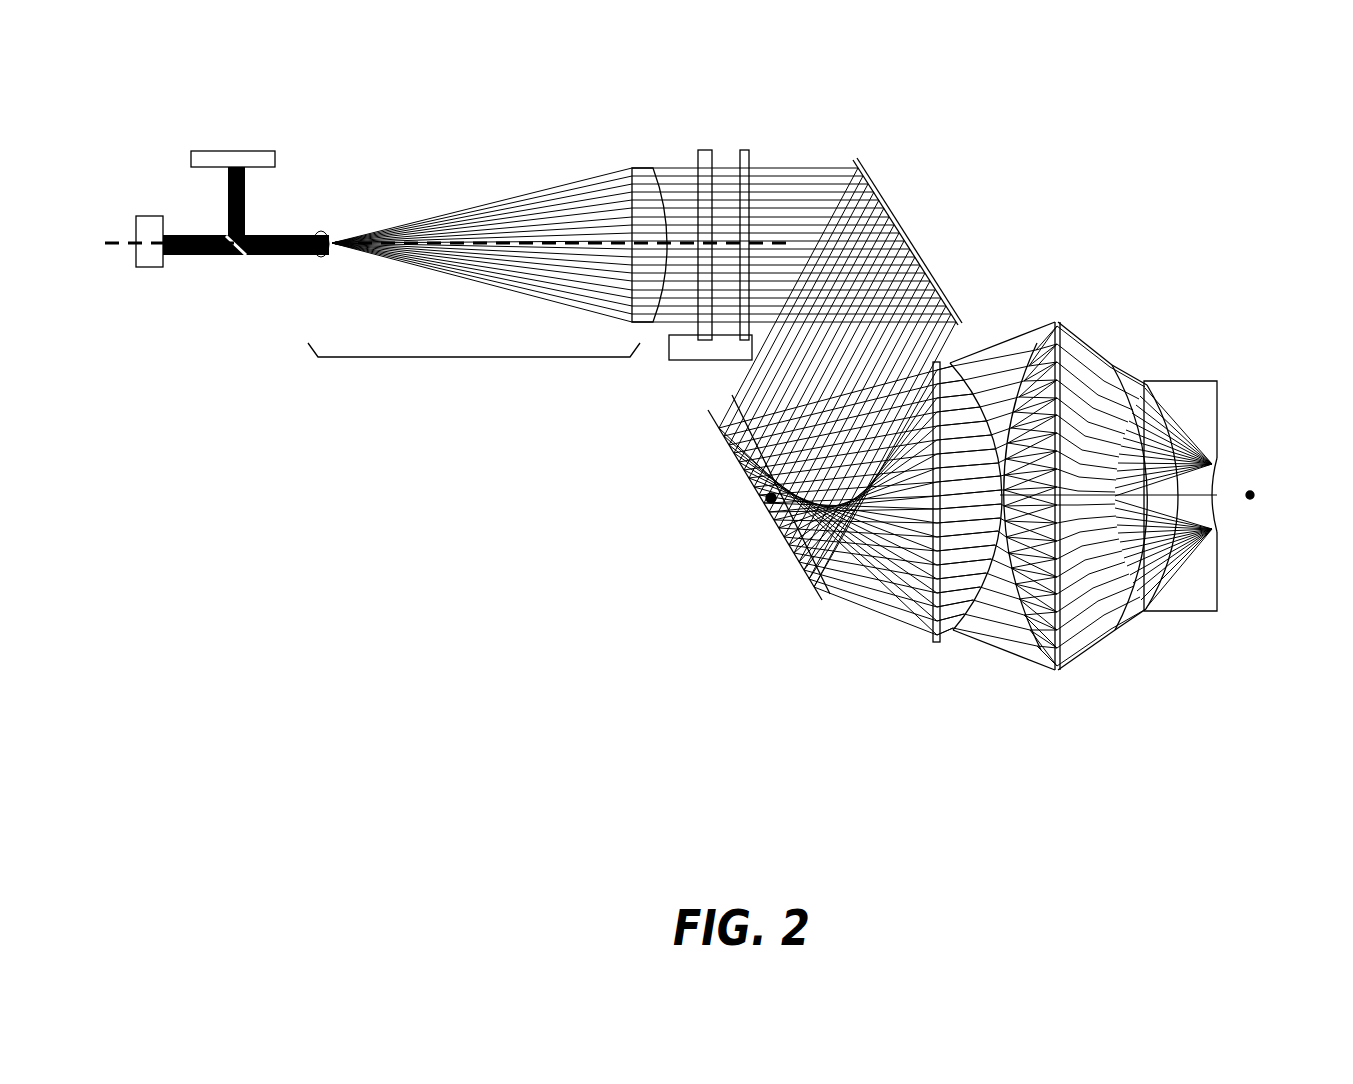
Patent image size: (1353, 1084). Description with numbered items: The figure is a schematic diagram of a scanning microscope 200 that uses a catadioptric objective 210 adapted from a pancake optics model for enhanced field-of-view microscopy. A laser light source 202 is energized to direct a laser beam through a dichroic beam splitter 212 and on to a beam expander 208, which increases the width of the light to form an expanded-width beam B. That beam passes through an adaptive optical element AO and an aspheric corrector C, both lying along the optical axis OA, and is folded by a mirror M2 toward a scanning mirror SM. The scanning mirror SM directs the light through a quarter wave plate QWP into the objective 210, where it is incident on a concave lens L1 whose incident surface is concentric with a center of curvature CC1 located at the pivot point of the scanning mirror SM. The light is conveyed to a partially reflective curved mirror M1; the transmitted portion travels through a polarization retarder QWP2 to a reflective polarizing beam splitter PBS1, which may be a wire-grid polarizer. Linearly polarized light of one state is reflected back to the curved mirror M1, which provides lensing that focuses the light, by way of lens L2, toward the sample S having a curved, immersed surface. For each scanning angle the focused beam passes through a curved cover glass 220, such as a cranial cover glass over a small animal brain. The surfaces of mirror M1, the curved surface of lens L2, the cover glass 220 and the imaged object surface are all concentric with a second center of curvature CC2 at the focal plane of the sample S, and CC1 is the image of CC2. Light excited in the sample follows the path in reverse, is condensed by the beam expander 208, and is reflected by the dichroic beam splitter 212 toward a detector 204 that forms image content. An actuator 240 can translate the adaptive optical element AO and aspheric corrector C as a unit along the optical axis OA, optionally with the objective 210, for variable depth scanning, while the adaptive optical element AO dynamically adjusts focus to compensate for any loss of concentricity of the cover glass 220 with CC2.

The scanning microscope 200 is at (392, 641).
The laser light source 202 is at (152, 268).
The detector 204 is at (275, 156).
The beam expander 208 is at (450, 358).
The catadioptric objective 210 is at (1064, 197).
The dichroic beam splitter 212 is at (243, 260).
The curved cover glass 220 is at (1141, 380).
The actuator 240 is at (670, 362).
The optical axis OA is at (438, 243).
The adaptive optical element AO is at (697, 150).
The aspheric corrector C is at (741, 150).
The expanded-width beam B is at (800, 163).
The mirror M2 is at (912, 256).
The scanning mirror SM is at (820, 590).
The center of curvature CC1 is at (768, 503).
The quarter wave plate QWP is at (932, 640).
The concave lens L1 is at (983, 644).
The partially reflective curved mirror M1 is at (1040, 343).
The polarization retarder QWP2 is at (1017, 653).
The reflective polarizing beam splitter PBS1 is at (1058, 322).
The lens L2 is at (1117, 636).
The sample S is at (1252, 451).
The center of curvature CC2 is at (1255, 495).